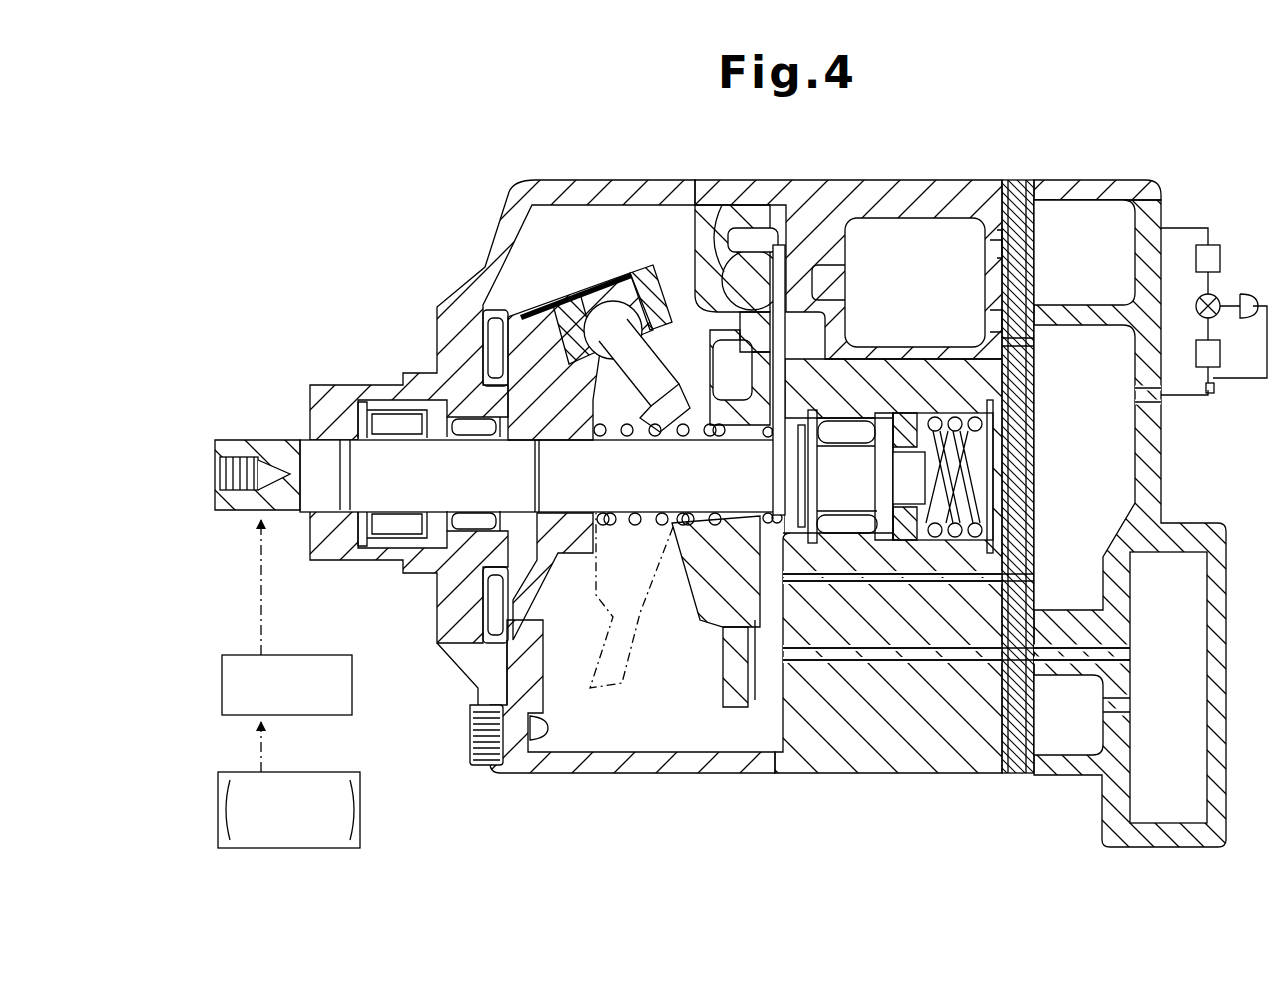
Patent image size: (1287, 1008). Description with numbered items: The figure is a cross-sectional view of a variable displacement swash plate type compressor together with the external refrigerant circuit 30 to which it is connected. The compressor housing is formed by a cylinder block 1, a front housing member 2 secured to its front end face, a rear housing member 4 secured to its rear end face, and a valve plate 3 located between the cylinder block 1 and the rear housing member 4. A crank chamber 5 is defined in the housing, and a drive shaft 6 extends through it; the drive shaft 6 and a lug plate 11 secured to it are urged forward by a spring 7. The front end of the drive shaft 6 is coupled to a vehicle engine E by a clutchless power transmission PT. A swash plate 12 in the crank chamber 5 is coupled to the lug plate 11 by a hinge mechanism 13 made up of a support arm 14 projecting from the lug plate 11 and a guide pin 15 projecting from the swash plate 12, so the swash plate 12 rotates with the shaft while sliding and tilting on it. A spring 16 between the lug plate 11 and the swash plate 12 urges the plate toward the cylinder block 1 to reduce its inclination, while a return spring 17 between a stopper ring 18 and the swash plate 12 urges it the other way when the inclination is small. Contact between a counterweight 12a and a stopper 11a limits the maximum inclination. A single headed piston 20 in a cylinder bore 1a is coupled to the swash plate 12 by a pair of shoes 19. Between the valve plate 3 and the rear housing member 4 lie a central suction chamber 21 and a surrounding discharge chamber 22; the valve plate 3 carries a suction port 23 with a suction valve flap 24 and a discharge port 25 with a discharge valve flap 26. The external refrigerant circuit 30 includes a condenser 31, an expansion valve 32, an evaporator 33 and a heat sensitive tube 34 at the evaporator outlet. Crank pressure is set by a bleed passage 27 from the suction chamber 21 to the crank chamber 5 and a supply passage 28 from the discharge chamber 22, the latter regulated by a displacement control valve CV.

The cylinder block 1 is at (860, 190).
The cylinder bore 1a is at (905, 212).
The front housing member 2 is at (660, 192).
The valve plate 3 is at (1017, 190).
The rear housing member 4 is at (1108, 188).
The crank chamber 5 is at (710, 745).
The drive shaft 6 is at (652, 500).
The spring 7 is at (965, 432).
The lug plate 11 is at (523, 330).
The stopper 11a is at (580, 560).
The swash plate 12 is at (723, 650).
The counterweight 12a is at (697, 590).
The hinge mechanism 13 is at (546, 218).
The support arm 14 is at (568, 305).
The guide pin 15 is at (655, 365).
The spring 16 is at (683, 424).
The return spring 17 is at (778, 500).
The stopper ring 18 is at (797, 458).
The shoe 19 is at (738, 232).
The single headed piston 20 is at (797, 212).
The suction chamber 21 is at (1090, 441).
The discharge chamber 22 is at (1122, 220).
The suction port 23 is at (1012, 343).
The suction valve flap 24 is at (995, 318).
The discharge port 25 is at (995, 242).
The discharge valve flap 26 is at (1036, 232).
The bleed passage 27 is at (878, 585).
The supply passage 28 is at (897, 661).
The external refrigerant circuit 30 is at (1215, 210).
The condenser 31 is at (1222, 250).
The expansion valve 32 is at (1220, 292).
The evaporator 33 is at (1220, 355).
The heat sensitive tube 34 is at (1214, 392).
The power transmission PT is at (355, 682).
The vehicle engine E is at (362, 806).
The displacement control valve CV is at (1168, 687).